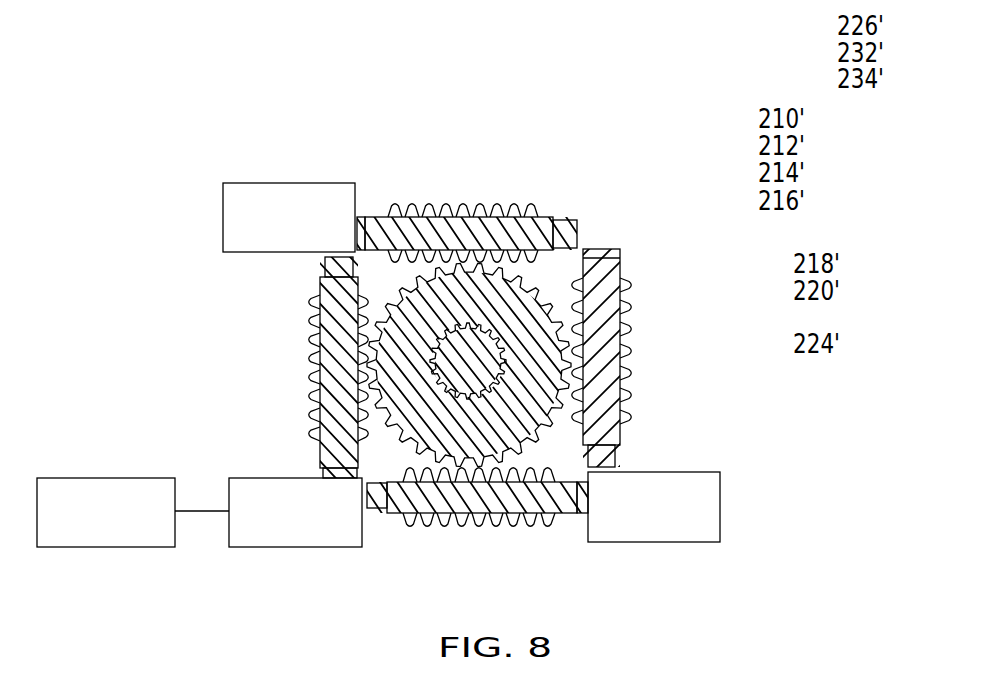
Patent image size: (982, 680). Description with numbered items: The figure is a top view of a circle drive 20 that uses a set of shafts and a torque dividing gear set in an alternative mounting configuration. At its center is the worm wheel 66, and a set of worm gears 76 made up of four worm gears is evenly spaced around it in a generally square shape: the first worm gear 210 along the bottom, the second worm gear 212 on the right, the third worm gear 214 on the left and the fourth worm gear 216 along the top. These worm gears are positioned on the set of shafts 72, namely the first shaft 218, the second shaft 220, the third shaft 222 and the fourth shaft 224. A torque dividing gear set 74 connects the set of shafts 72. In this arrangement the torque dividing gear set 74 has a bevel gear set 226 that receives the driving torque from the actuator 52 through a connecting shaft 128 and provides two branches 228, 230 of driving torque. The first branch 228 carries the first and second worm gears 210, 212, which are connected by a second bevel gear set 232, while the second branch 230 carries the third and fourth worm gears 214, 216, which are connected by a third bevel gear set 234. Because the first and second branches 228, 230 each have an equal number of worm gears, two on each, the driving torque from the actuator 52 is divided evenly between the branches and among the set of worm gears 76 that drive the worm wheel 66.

The circle drive 20 is at (155, 310).
The actuator 52 is at (105, 478).
The worm wheel 66 is at (507, 300).
The set of shafts 72 is at (790, 245).
The torque dividing gear set 74 is at (833, 5).
The set of worm gears 76 is at (753, 107).
The drive shaft 128 is at (203, 512).
The first worm gear 210 is at (485, 492).
The second worm gear 212 is at (597, 353).
The third worm gear 214 is at (346, 361).
The fourth worm gear 216 is at (592, 231).
The first shaft 218 is at (532, 523).
The second shaft 220 is at (623, 380).
The third shaft 222 is at (614, 268).
The fourth shaft 224 is at (313, 397).
The bevel gear set 226 is at (287, 478).
The first branch 228 is at (410, 562).
The second branch 230 is at (197, 360).
The second bevel gear set 232 is at (658, 542).
The third bevel gear set 234 is at (287, 183).